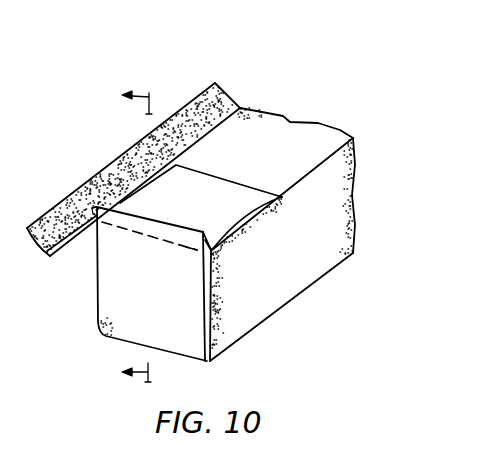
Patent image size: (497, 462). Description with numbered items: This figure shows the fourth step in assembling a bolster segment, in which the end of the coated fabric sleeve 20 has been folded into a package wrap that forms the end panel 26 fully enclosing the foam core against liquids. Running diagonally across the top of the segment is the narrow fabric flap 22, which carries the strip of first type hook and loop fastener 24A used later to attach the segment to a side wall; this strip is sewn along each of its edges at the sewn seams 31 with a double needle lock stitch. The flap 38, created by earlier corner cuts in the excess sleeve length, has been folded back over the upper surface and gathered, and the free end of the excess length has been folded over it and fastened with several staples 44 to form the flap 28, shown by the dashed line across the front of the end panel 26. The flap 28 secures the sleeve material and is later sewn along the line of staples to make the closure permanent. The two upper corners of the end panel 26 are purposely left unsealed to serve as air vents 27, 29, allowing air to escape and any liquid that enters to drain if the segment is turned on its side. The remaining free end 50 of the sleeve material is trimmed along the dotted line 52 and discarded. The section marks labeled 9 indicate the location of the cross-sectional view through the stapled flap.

The sleeve 20 is at (296, 272).
The flap 22 is at (188, 104).
The first type hook and loop fastener strip 24A is at (128, 170).
The end panel 26 is at (115, 293).
The air vent 27 is at (211, 250).
The flap 28 is at (147, 235).
The air vent 29 is at (97, 232).
The sewn seams 31 is at (212, 84).
The flap 38 is at (216, 189).
The staples 44 is at (187, 249).
The free end 50 is at (40, 218).
The dotted line 52 is at (89, 206).
The section line 9 is at (129, 232).